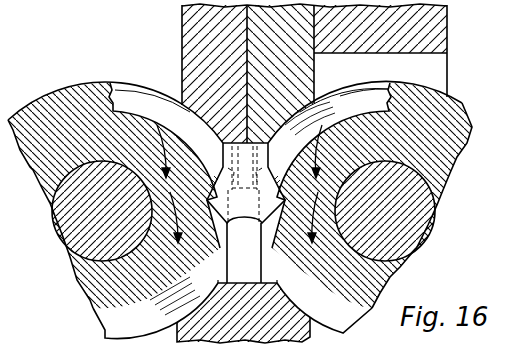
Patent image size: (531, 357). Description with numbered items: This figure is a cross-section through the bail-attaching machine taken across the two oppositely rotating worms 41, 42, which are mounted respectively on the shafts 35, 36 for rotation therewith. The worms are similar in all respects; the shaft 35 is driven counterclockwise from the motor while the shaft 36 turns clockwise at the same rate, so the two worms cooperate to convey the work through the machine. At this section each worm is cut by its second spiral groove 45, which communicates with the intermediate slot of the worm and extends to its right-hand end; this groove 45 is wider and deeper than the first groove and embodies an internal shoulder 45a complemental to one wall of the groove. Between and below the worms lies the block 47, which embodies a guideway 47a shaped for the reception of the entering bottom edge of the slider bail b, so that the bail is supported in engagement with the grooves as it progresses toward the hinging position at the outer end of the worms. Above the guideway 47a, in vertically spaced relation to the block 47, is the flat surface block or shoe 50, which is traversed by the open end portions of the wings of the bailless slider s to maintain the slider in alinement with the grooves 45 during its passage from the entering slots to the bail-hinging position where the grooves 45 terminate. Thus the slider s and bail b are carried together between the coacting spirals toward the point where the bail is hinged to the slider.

The shaft 35 is at (423, 220).
The shaft 36 is at (77, 221).
The worm 41 is at (483, 158).
The worm 42 is at (66, 88).
The second spiral groove 45 is at (128, 103).
The internal shoulder 45a is at (351, 82).
The block 47 is at (203, 327).
The guideway 47a is at (250, 271).
The flat surface block or shoe 50 is at (192, 28).
The bailless slider s is at (219, 185).
The slider bail b is at (236, 245).